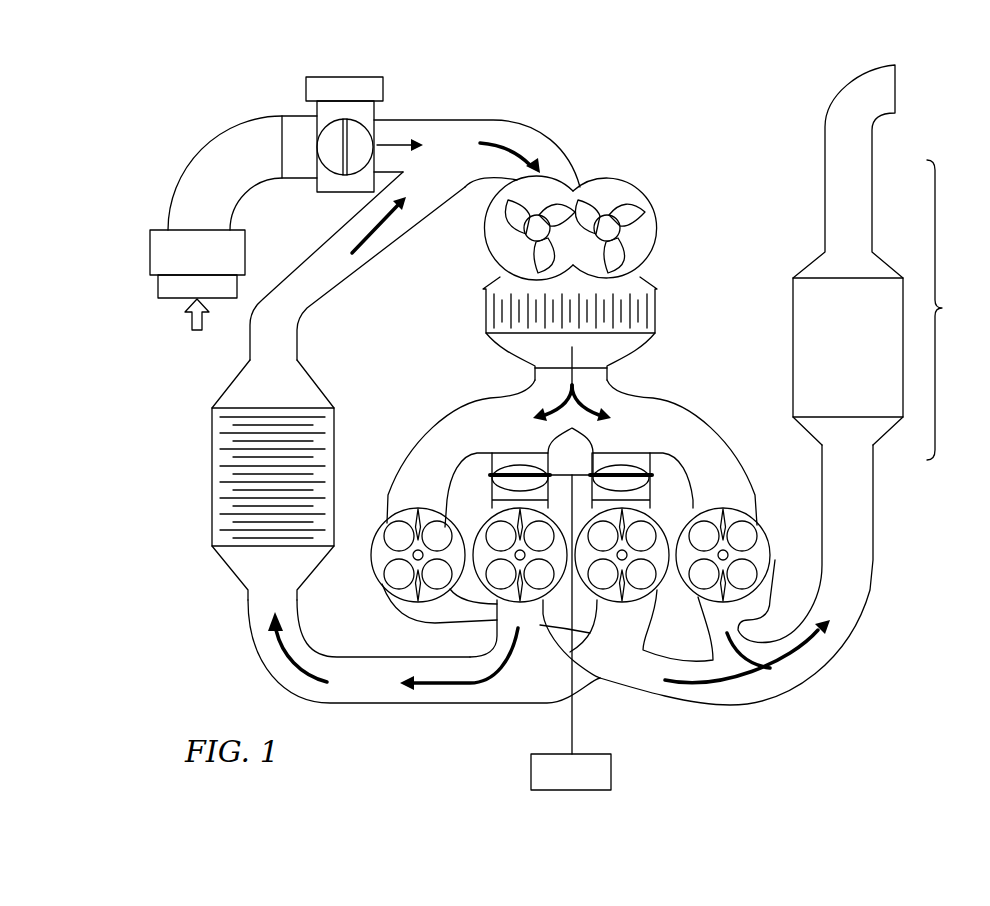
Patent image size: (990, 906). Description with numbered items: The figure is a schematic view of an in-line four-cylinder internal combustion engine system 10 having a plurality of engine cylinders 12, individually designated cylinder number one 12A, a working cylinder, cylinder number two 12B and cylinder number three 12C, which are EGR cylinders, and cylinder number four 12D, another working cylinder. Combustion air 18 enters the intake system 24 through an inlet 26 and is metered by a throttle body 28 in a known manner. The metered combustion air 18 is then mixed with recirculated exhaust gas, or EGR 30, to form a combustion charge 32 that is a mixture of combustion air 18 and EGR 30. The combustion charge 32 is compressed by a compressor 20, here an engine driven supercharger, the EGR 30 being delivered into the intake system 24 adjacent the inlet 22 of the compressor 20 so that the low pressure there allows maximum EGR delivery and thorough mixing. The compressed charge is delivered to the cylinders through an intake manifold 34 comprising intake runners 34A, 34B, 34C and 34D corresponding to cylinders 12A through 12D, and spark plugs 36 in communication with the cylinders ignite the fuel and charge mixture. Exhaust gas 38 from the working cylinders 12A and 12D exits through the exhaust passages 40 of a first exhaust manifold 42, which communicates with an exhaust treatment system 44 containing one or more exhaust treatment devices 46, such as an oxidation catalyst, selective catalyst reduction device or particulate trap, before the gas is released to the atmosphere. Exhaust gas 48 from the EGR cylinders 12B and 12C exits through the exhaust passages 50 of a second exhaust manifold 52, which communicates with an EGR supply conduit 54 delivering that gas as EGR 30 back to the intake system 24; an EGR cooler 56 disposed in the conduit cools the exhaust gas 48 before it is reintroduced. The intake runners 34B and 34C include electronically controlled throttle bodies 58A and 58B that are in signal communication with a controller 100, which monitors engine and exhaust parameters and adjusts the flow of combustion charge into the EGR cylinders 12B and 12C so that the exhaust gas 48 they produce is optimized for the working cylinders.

The internal combustion engine system 10 is at (735, 318).
The engine cylinders 12 is at (560, 565).
The cylinder #1 (working cylinder) 12A is at (372, 573).
The cylinder #2 (EGR cylinder) 12B is at (473, 540).
The cylinder #3 (EGR cylinder) 12C is at (637, 600).
The cylinder #4 (working cylinder) 12D is at (763, 565).
The combustion air 18 is at (188, 337).
The compressor (supercharger) 20 is at (653, 193).
The compressor inlet 22 is at (582, 186).
The intake system 24 is at (423, 110).
The inlet 26 is at (165, 287).
The throttle body 28 is at (355, 88).
The recirculated exhaust gas (EGR) 30 is at (375, 237).
The combustion charge 32 is at (510, 148).
The intake manifold 34 is at (508, 382).
The intake runner 34A is at (392, 492).
The intake runner 34B is at (491, 452).
The intake runner 34C is at (663, 452).
The intake runner 34D is at (745, 470).
The spark plugs 36 is at (385, 566).
The exhaust gas 38 is at (743, 685).
The exhaust passages 40 is at (627, 682).
The first exhaust manifold 42 is at (683, 712).
The exhaust treatment system 44 is at (971, 322).
The exhaust treatment device 46 is at (862, 356).
The exhaust gas 48 is at (287, 636).
The exhaust passages 50 is at (440, 628).
The second exhaust manifold 52 is at (526, 712).
The EGR supply conduit 54 is at (327, 300).
The EGR cooler 56 is at (223, 505).
The electronically controlled throttle body 58A is at (523, 462).
The electronically controlled throttle body 58B is at (622, 462).
The controller 100 is at (612, 772).